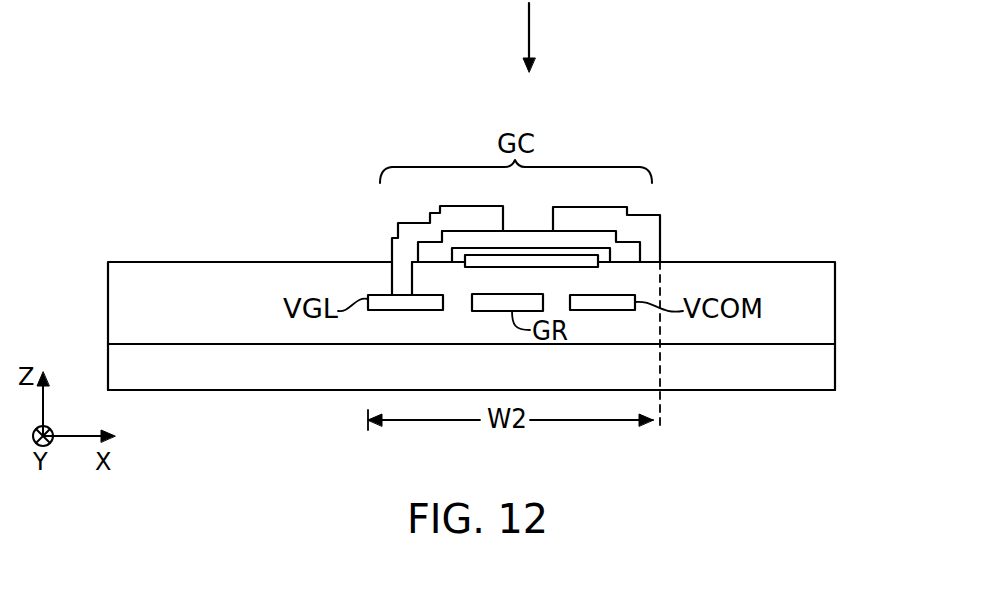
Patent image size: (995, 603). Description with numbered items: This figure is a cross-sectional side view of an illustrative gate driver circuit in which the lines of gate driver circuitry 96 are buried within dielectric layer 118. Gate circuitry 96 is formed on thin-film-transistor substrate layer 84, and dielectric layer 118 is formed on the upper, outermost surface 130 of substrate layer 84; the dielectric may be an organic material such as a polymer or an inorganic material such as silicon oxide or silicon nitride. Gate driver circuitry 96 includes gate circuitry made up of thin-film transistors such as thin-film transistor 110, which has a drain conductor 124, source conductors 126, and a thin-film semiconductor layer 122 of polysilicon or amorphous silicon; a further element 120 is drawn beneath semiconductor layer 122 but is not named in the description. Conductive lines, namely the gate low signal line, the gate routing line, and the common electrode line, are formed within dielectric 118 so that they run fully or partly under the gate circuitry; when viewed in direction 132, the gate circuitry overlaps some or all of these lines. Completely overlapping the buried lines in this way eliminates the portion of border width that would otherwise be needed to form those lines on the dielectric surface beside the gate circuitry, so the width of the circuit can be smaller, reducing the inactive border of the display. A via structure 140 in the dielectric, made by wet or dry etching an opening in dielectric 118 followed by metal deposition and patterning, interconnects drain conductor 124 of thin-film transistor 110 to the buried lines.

The direction 132 is at (529, 28).
The gate driver circuitry 96 is at (743, 83).
The thin-film transistor 110 is at (531, 199).
The drain conductor 124 is at (477, 215).
The thin-film semiconductor layer 122 is at (558, 238).
The source conductors 126 is at (642, 225).
The via structure 140 is at (397, 278).
The gate 120 is at (568, 267).
The dielectric layer 118 is at (825, 297).
The thin-film-transistor substrate layer 84 is at (825, 362).
The upper surface 130 is at (772, 345).